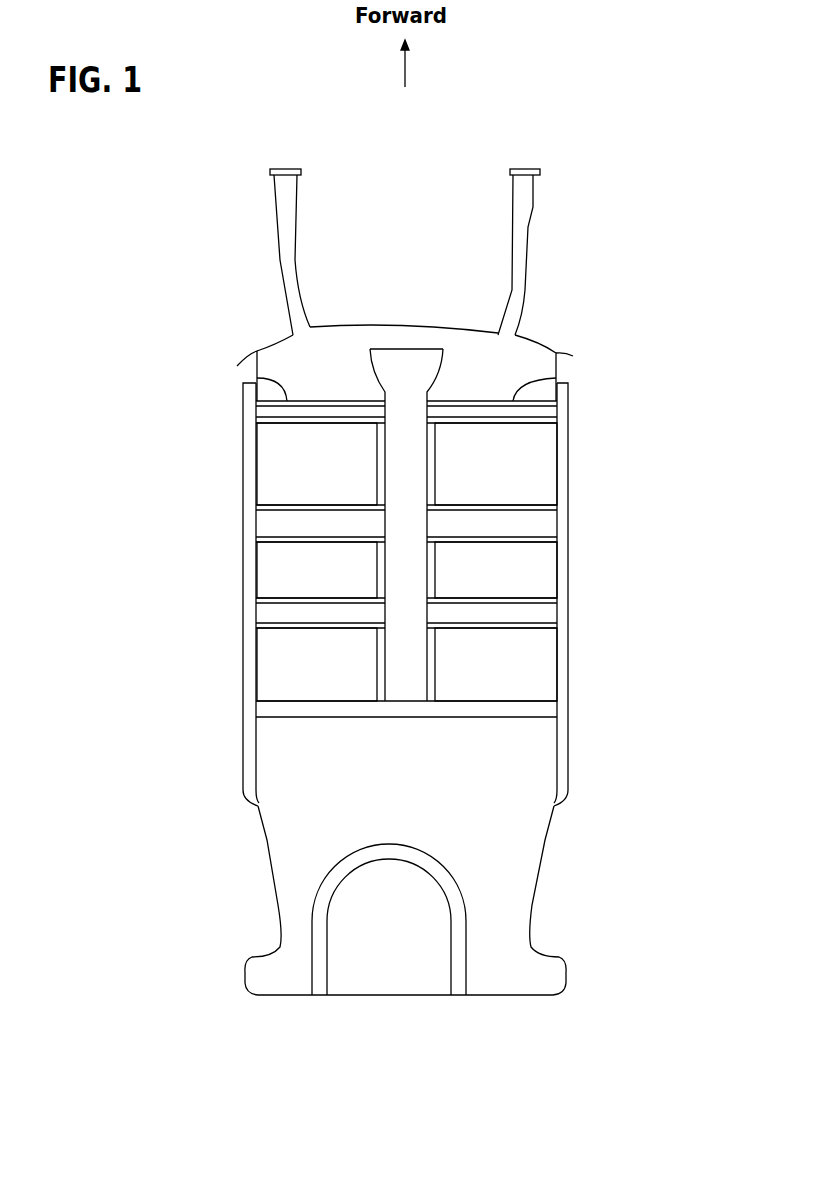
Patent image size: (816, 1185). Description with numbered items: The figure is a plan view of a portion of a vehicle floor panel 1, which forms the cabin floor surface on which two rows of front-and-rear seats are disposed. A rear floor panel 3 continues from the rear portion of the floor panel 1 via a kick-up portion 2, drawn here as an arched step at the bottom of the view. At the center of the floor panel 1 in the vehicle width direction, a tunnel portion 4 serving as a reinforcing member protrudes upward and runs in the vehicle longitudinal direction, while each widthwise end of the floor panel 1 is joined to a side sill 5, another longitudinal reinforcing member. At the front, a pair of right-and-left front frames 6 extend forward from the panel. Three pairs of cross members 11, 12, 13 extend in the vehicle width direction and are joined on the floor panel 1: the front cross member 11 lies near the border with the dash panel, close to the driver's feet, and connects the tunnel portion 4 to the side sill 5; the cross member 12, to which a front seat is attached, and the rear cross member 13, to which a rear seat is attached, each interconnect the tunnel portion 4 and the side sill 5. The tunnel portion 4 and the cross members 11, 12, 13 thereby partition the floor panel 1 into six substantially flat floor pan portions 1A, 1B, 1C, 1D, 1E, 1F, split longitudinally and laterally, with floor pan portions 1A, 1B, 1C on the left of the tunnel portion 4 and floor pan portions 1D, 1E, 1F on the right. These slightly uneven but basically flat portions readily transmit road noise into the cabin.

The floor panel 1 is at (526, 861).
The floor pan portion 1A is at (275, 460).
The floor pan portion 1B is at (270, 570).
The floor pan portion 1C is at (272, 680).
The floor pan portion 1D is at (540, 480).
The floor pan portion 1E is at (535, 588).
The floor pan portion 1F is at (540, 663).
The kick-up portion 2 is at (498, 712).
The rear floor panel 3 is at (288, 860).
The tunnel portion 4 is at (416, 455).
The side sill 5 is at (248, 648).
The front frame 6 is at (283, 210).
The front cross member 11 is at (270, 377).
The cross member 12 is at (270, 522).
The rear cross member 13 is at (262, 614).